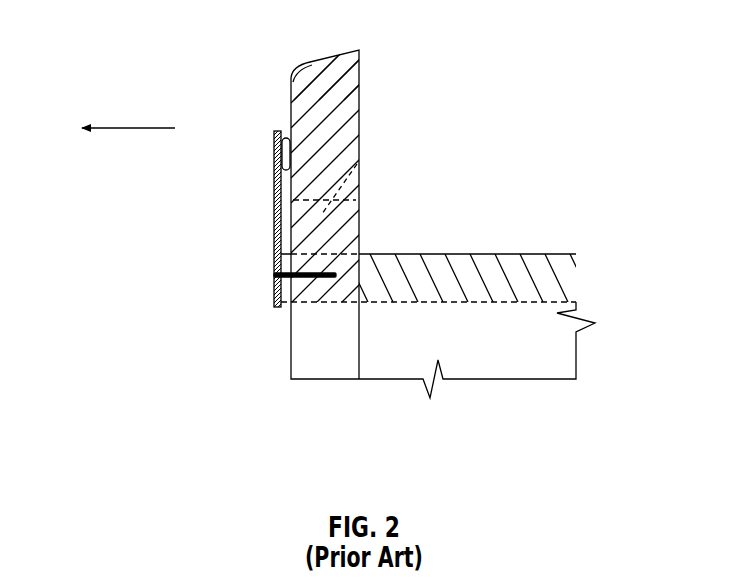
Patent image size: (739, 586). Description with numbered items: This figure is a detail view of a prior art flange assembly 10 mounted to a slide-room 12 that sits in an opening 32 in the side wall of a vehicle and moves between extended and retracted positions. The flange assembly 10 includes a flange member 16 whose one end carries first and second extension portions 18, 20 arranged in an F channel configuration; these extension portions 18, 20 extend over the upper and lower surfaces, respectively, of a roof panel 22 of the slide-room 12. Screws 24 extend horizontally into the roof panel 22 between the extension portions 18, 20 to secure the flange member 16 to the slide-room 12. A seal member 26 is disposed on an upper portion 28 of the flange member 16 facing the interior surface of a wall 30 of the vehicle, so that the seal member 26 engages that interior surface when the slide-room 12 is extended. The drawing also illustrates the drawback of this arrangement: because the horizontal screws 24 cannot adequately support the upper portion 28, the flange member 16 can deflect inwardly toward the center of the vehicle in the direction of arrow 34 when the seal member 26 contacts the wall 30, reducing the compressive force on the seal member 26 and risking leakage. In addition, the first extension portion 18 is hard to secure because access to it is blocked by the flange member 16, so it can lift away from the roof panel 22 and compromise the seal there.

The flange assembly 10 is at (522, 76).
The slide-room 12 is at (518, 341).
The flange member 16 is at (273, 212).
The first extension portion 18 is at (298, 253).
The second extension portion 20 is at (296, 308).
The roof panel 22 is at (533, 249).
The screws 24 is at (327, 279).
The seal member 26 is at (282, 137).
The upper portion 28 is at (269, 168).
The wall 30 is at (359, 82).
The opening 32 is at (351, 171).
The arrow 34 is at (152, 127).